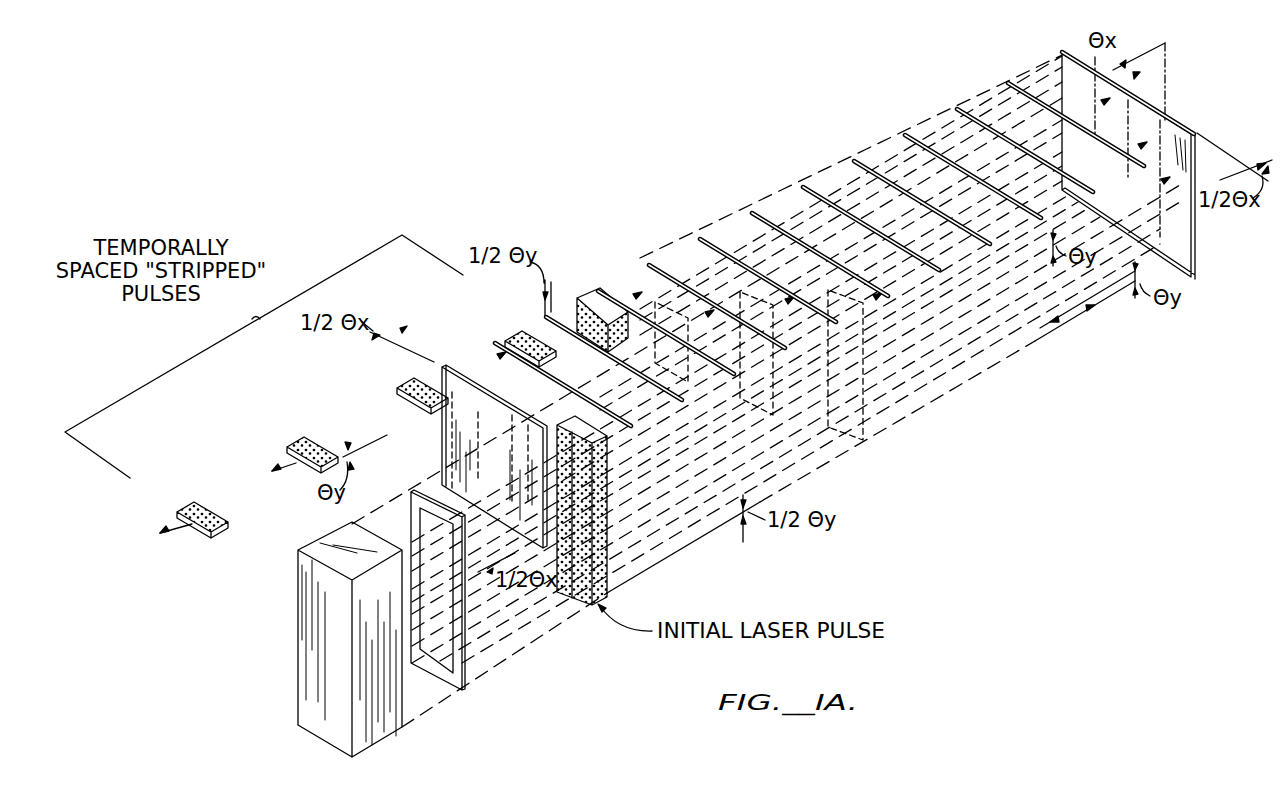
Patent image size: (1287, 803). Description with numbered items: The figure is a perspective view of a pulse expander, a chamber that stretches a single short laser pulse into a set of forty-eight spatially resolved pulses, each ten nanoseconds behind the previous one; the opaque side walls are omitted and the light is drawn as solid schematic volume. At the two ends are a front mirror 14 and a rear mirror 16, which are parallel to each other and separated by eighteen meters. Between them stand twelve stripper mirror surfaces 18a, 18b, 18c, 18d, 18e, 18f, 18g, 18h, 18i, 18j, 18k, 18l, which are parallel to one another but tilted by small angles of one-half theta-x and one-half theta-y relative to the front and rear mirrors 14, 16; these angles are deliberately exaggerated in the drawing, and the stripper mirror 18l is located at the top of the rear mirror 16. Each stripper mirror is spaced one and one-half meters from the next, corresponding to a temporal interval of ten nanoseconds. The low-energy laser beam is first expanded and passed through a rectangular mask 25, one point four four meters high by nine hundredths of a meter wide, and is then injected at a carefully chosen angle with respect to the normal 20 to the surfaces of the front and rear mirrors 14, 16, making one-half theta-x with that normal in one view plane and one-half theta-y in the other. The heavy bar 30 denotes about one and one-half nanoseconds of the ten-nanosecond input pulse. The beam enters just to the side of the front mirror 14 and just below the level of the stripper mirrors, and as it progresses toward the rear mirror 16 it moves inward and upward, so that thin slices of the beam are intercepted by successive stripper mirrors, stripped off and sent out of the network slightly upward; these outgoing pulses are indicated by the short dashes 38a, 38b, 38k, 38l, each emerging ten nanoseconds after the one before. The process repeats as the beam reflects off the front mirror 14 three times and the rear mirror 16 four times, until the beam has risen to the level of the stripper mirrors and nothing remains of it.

The front mirror 14 is at (445, 453).
The rear mirror 16 is at (1183, 228).
The stripper mirror surface 18a is at (493, 349).
The stripper mirror surface 18b is at (540, 318).
The stripper mirror surface 18c is at (597, 290).
The stripper mirror surface 18d is at (645, 265).
The stripper mirror surface 18e is at (697, 240).
The stripper mirror surface 18f is at (748, 213).
The stripper mirror surface 18g is at (800, 188).
The stripper mirror surface 18h is at (852, 163).
The stripper mirror surface 18i is at (905, 137).
The stripper mirror surface 18j is at (957, 110).
The stripper mirror surface 18k is at (1008, 83).
The stripper mirror surface 18l is at (1060, 54).
The normal 20 is at (722, 536).
The rectangular mask 25 is at (465, 684).
The injected beam 30 is at (608, 566).
The outgoing pulse 38a is at (408, 382).
The outgoing pulse 38b is at (522, 334).
The outgoing pulse 38k is at (200, 502).
The outgoing pulse 38l is at (306, 445).